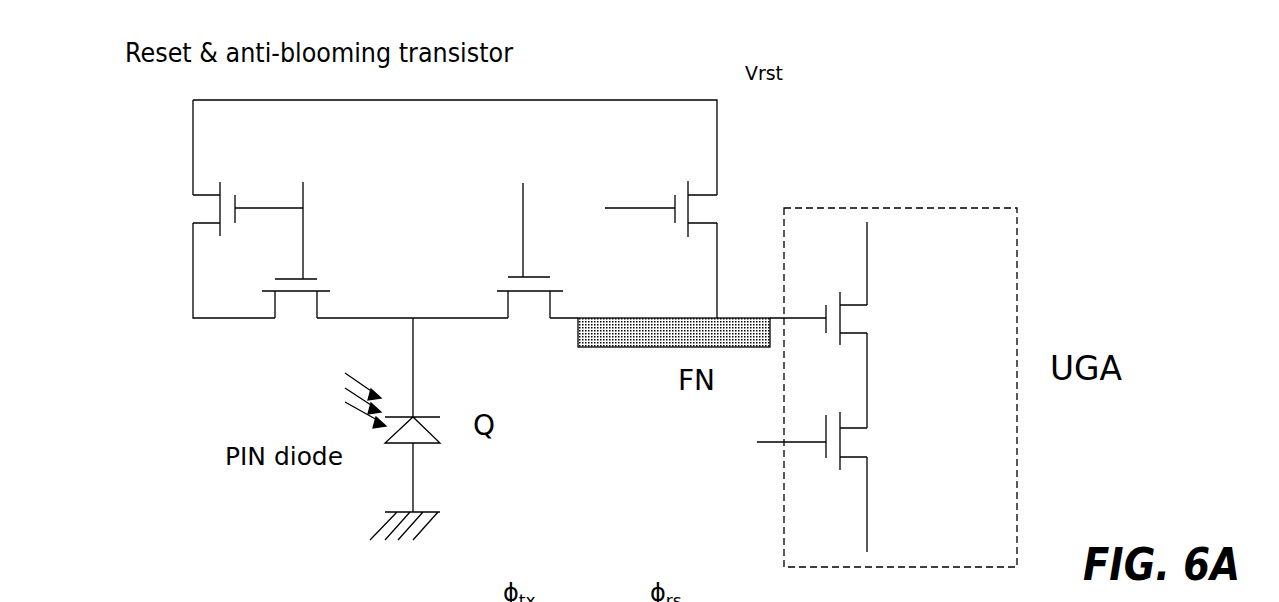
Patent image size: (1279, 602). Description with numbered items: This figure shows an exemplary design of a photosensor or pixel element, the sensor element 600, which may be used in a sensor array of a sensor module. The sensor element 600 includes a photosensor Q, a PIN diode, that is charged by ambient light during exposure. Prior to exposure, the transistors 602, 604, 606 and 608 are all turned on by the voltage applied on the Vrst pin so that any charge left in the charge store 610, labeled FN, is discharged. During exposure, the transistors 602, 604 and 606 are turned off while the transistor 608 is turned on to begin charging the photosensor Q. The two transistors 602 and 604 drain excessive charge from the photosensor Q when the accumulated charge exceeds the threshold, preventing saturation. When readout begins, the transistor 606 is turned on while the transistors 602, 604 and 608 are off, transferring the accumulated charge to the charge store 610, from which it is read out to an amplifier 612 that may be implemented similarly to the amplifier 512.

The sensor element 600 is at (551, 163).
The transistor 602 is at (318, 294).
The transistor 604 is at (270, 230).
The transistor 606 is at (531, 233).
The transistor 608 is at (656, 205).
The charge store 610 is at (674, 354).
The amplifier 612 is at (948, 387).
The amplifier 512 is at (964, 402).